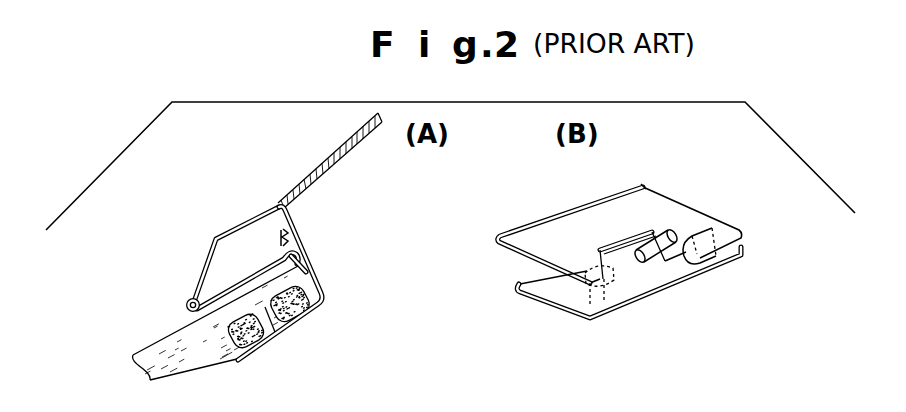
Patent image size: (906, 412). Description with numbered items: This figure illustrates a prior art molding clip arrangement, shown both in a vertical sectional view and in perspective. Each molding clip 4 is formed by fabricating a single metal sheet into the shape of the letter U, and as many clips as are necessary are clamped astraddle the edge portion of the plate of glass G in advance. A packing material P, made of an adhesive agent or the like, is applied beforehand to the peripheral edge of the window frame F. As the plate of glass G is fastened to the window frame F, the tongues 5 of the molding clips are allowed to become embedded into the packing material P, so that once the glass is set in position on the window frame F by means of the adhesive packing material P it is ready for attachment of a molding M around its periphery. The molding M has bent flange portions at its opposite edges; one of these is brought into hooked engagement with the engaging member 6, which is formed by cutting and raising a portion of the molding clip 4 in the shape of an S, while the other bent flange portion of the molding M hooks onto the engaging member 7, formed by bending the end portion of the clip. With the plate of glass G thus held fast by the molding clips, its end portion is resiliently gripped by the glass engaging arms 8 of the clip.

The molding clip 4 is at (454, 249).
The tongue 5 is at (283, 322).
The engaging member 6 is at (280, 239).
The engaging member 7 is at (191, 300).
The glass engaging arm 8 is at (295, 264).
The window frame F is at (333, 158).
The plate of glass G is at (171, 340).
The molding M is at (243, 226).
The packing material P is at (255, 338).